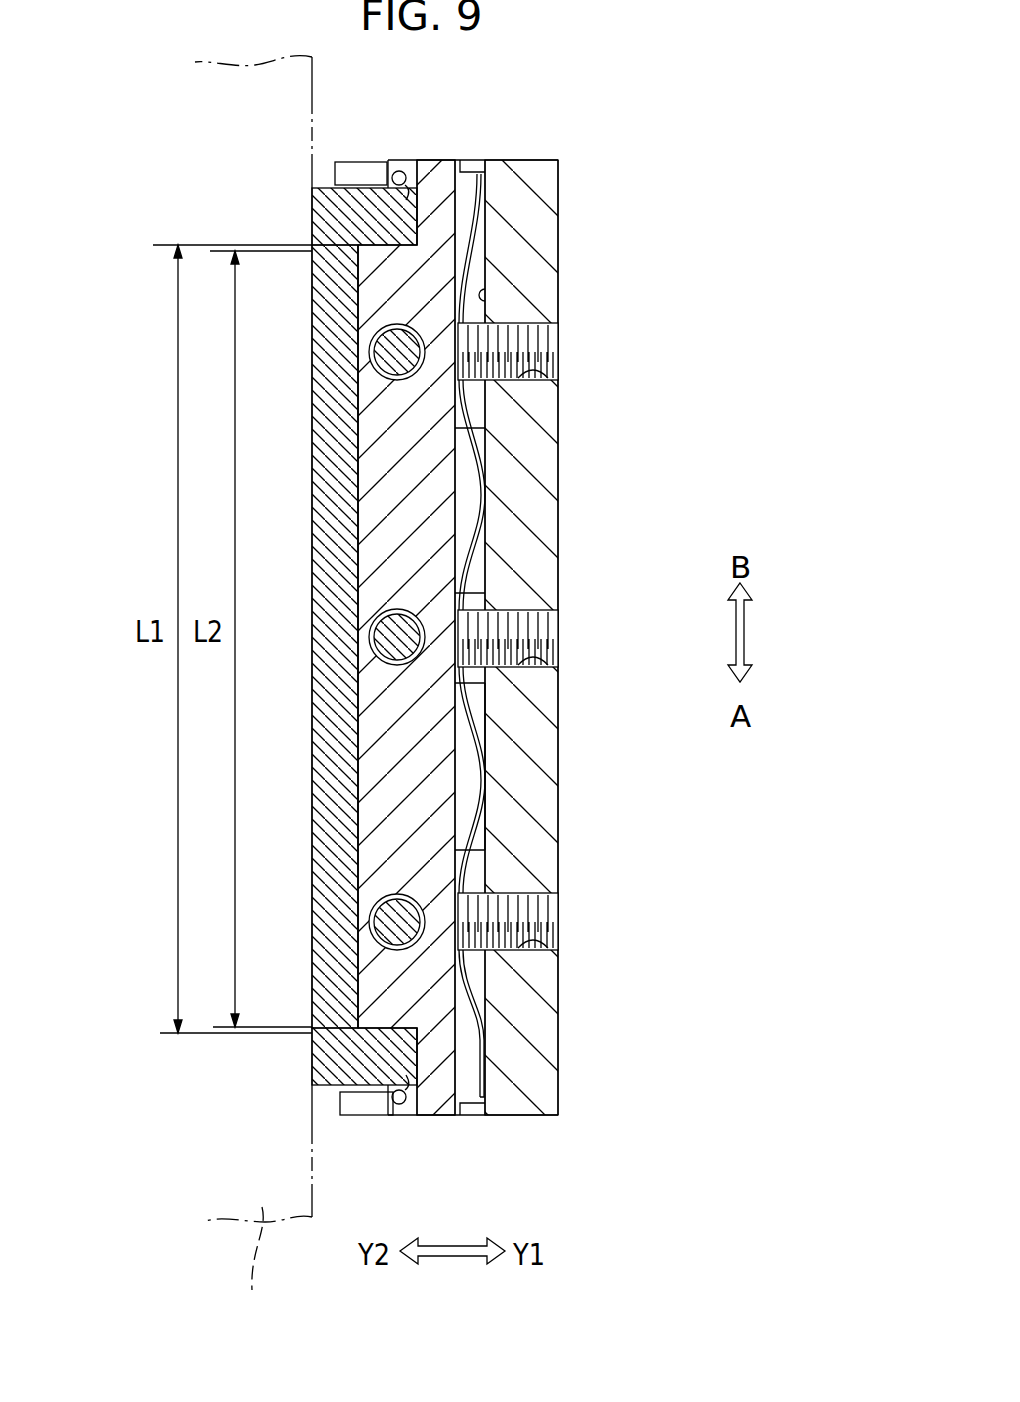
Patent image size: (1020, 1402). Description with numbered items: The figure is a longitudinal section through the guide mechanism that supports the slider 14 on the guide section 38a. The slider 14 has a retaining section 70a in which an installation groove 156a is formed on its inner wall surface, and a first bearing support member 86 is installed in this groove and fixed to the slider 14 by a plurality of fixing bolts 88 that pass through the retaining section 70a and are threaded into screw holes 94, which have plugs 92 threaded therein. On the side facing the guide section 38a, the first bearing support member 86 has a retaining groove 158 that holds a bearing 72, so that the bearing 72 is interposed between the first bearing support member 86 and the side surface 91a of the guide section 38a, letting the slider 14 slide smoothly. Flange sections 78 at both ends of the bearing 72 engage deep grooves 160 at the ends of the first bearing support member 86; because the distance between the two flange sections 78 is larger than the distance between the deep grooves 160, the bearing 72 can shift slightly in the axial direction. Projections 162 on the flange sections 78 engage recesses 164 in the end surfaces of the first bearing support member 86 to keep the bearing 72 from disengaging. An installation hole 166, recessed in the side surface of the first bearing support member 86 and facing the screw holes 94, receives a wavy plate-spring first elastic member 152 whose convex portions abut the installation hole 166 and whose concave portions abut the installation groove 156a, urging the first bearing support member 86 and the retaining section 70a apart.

The slider 14 is at (542, 276).
The guide section 38a is at (263, 1269).
The retaining section 70a is at (533, 813).
The bearing 72 is at (339, 794).
The flange section 78 is at (320, 214).
The first bearing support member 86 is at (395, 466).
The fixing bolt 88 is at (385, 357).
The side surface 91a is at (312, 1197).
The plug 92 is at (538, 340).
The screw hole 94 is at (542, 374).
The first elastic member 152 is at (487, 700).
The installation groove 156a is at (484, 298).
The retaining groove 158 is at (357, 507).
The deep groove 160 is at (417, 199).
The projection 162 is at (397, 166).
The recess 164 is at (390, 161).
The installation hole 166 is at (458, 1074).